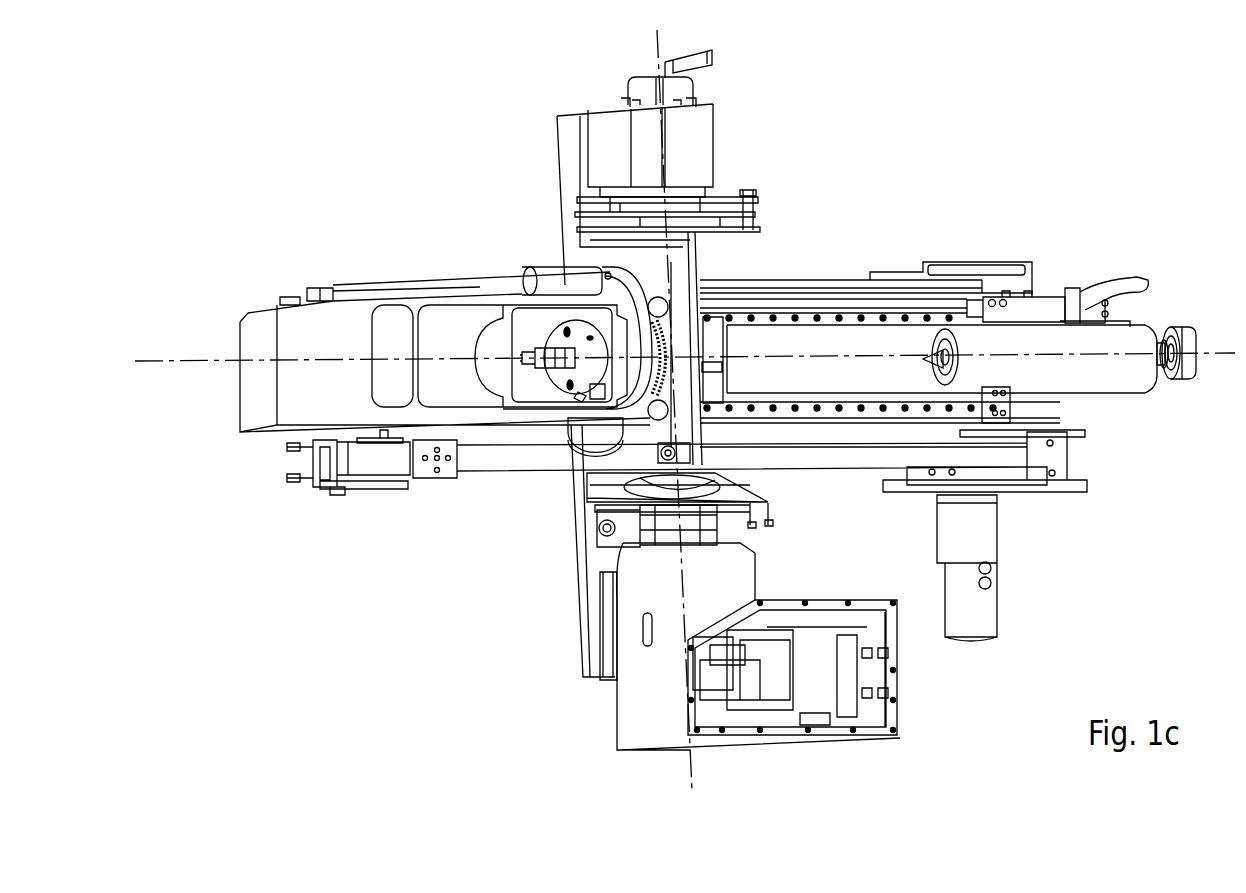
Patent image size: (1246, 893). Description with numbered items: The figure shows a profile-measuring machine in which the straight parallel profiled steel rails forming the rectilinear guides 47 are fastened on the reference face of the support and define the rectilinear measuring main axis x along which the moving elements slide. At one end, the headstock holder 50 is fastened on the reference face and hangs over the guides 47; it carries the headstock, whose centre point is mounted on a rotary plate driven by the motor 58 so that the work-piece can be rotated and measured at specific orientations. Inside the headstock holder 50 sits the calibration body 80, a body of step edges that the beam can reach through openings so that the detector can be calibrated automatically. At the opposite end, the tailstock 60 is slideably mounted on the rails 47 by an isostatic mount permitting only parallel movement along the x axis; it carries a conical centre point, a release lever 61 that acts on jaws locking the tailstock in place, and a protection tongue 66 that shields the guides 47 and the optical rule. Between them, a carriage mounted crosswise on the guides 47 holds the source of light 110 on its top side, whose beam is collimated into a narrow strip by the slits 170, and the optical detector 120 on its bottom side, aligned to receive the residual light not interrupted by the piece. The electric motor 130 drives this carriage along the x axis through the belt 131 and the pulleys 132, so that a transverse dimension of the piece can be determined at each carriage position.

The source of light 110 is at (697, 148).
The slits 170 is at (722, 228).
The protection tongue 66 is at (875, 345).
The rectilinear guides 47 is at (787, 407).
The release lever 61 is at (1145, 283).
The headstock holder 50 is at (348, 332).
The calibration body 80 is at (503, 337).
The tailstock 60 is at (1112, 362).
The motor 58 is at (580, 462).
The pulleys 132 is at (347, 492).
The belt 131 is at (853, 453).
The electric motor 130 is at (983, 542).
The optical detector 120 is at (642, 696).